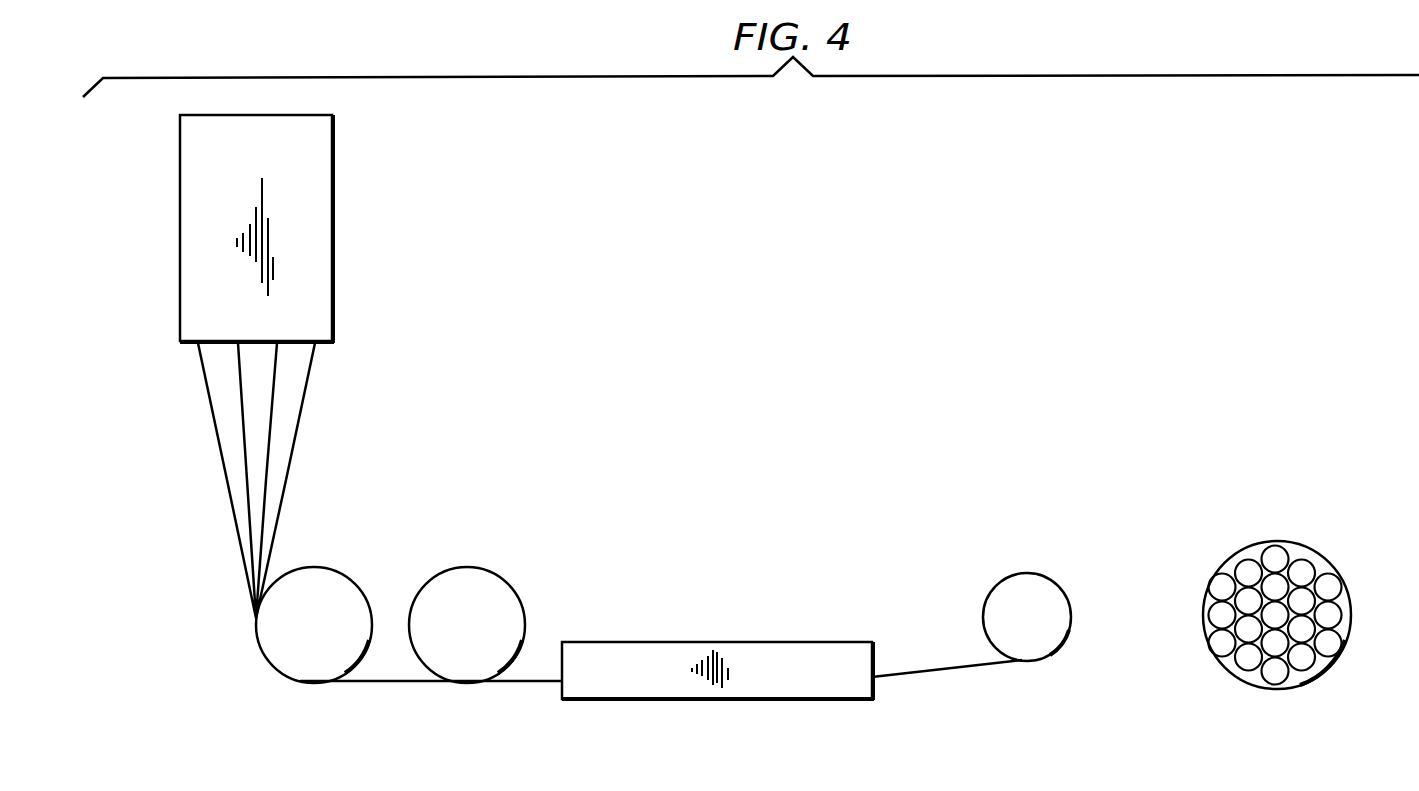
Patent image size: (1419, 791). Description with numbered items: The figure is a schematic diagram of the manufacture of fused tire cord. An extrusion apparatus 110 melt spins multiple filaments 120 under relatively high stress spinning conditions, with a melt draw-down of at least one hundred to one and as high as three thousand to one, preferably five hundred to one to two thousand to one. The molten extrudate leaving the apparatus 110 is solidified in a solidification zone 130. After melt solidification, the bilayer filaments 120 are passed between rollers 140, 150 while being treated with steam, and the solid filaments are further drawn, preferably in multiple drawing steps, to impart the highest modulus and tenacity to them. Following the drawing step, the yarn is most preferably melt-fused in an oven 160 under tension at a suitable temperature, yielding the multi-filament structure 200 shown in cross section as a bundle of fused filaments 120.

The apparatus 110 is at (356, 262).
The multiple filaments 120 is at (222, 458).
The solidification zone 130 is at (215, 508).
The roller 140 is at (323, 567).
The roller 150 is at (473, 567).
The oven 160 is at (695, 642).
The multi-filament structure 200 is at (1262, 520).